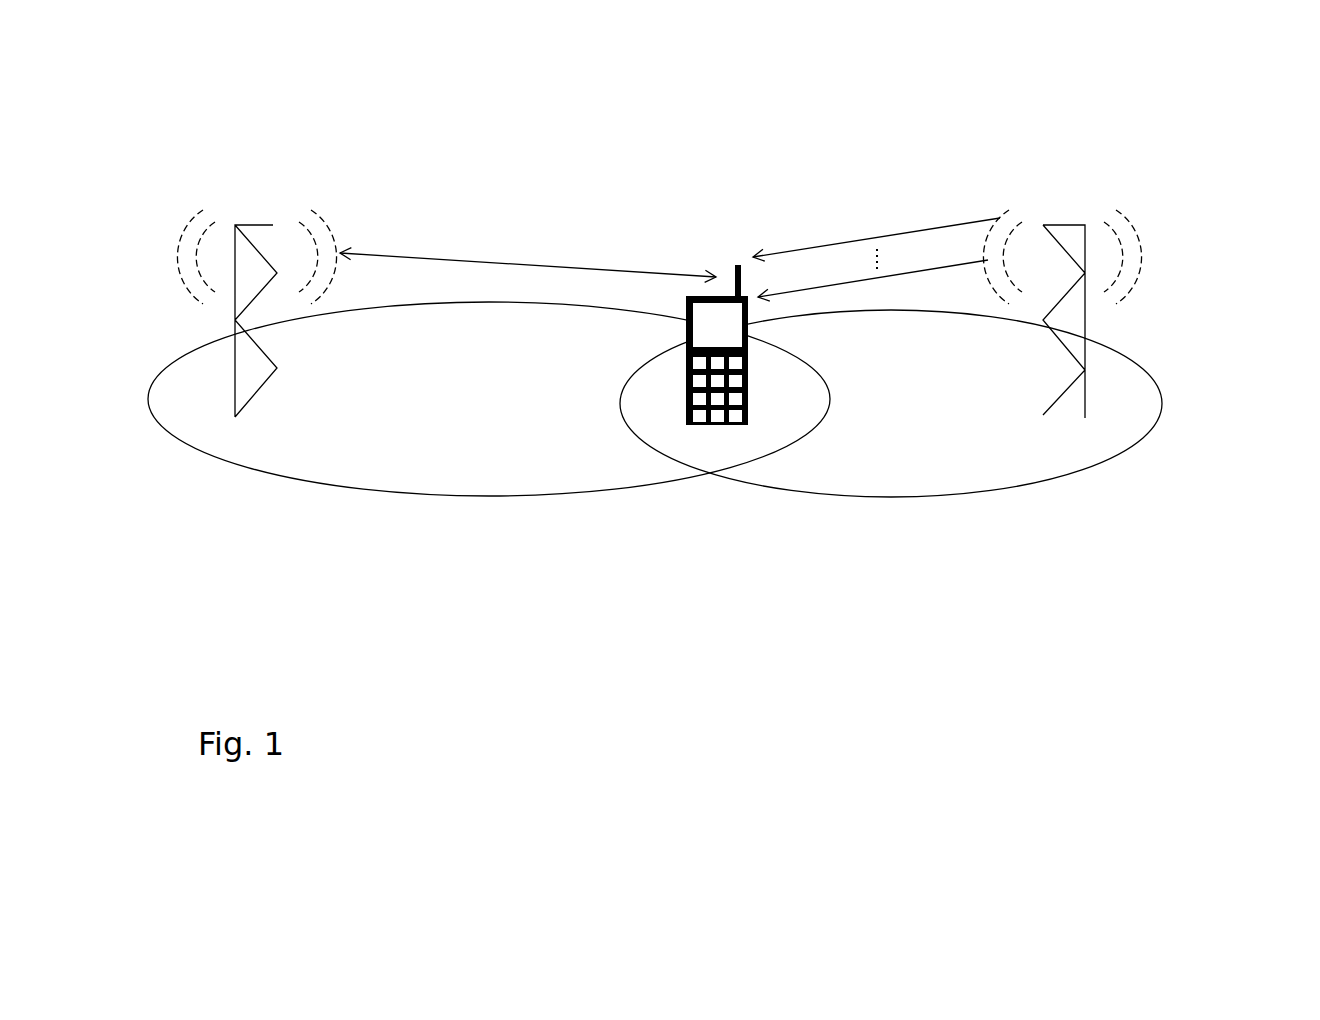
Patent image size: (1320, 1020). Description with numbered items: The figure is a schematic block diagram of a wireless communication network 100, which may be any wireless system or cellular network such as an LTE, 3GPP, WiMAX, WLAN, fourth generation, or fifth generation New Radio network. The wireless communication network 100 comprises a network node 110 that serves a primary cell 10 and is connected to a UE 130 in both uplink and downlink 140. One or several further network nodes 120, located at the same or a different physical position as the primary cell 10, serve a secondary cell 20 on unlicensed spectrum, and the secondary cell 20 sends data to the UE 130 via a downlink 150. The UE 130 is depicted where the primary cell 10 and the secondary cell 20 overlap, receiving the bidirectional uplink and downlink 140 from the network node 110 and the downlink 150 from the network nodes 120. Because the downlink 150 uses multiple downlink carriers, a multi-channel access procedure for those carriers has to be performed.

The wireless communication network 100 is at (405, 537).
The primary cell 10 is at (489, 399).
The secondary cell 20 is at (891, 403).
The network node 110 is at (273, 233).
The network nodes 120 is at (1043, 225).
The UE 130 is at (715, 398).
The uplink and downlink 140 is at (428, 258).
The downlink 150 is at (780, 255).